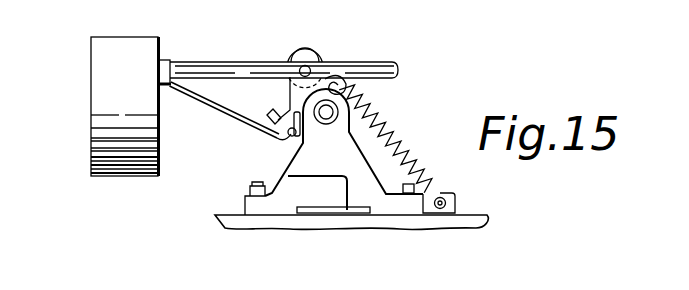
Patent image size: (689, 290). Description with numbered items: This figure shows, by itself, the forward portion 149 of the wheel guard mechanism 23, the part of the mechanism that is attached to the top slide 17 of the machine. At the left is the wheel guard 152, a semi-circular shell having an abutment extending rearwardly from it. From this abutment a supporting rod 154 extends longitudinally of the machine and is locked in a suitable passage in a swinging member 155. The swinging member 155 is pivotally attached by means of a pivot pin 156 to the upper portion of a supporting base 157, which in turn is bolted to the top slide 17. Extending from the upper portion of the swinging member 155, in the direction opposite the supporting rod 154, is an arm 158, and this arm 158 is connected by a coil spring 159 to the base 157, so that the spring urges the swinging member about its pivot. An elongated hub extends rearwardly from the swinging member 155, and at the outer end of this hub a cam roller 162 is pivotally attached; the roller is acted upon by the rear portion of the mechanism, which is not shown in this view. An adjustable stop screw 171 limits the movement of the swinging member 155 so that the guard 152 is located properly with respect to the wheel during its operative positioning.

The wheel guard mechanism 23 is at (120, 45).
The wheel guard 152 is at (100, 98).
The supporting rod 154 is at (228, 72).
The swinging member 155 is at (222, 97).
The adjustable stop screw 171 is at (297, 137).
The cam roller 162 is at (305, 52).
The pivot pin 156 is at (326, 128).
The arm 158 is at (362, 83).
The coil spring 159 is at (392, 125).
The supporting base 157 is at (362, 173).
The forward portion 149 is at (253, 207).
The top slide 17 is at (472, 216).